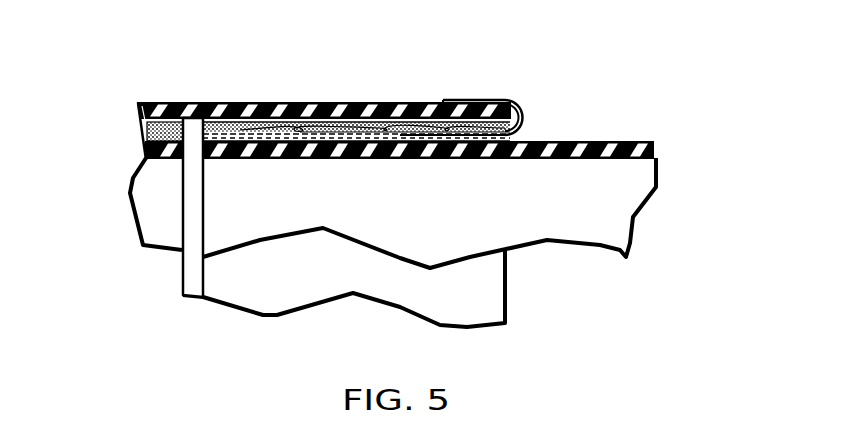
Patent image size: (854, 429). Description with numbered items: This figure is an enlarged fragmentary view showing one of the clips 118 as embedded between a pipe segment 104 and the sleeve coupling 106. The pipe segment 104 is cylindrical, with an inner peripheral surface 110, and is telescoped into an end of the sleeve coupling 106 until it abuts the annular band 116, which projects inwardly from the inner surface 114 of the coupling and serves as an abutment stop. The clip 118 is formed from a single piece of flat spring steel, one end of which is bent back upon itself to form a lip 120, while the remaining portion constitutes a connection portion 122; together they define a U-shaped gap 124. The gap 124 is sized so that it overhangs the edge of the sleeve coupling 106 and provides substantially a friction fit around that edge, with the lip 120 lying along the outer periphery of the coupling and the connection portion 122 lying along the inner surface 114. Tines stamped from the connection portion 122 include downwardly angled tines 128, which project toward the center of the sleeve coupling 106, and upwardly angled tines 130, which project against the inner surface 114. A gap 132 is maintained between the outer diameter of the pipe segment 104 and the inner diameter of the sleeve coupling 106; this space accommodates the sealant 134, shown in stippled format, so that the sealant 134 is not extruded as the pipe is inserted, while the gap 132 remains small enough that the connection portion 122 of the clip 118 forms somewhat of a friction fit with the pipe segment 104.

The pipe segment 104 is at (451, 155).
The sleeve coupling 106 is at (358, 123).
The inner peripheral surface 110 is at (267, 216).
The inner surface 114 is at (267, 290).
The annular band 116 is at (192, 274).
The clip 118 is at (519, 84).
The lip 120 is at (462, 98).
The connection portion 122 is at (498, 150).
The U-shaped gap 124 is at (523, 109).
The downwardly angled tines 128 is at (378, 141).
The upwardly angled tines 130 is at (327, 125).
The gap 132 is at (513, 127).
The sealant 134 is at (150, 120).